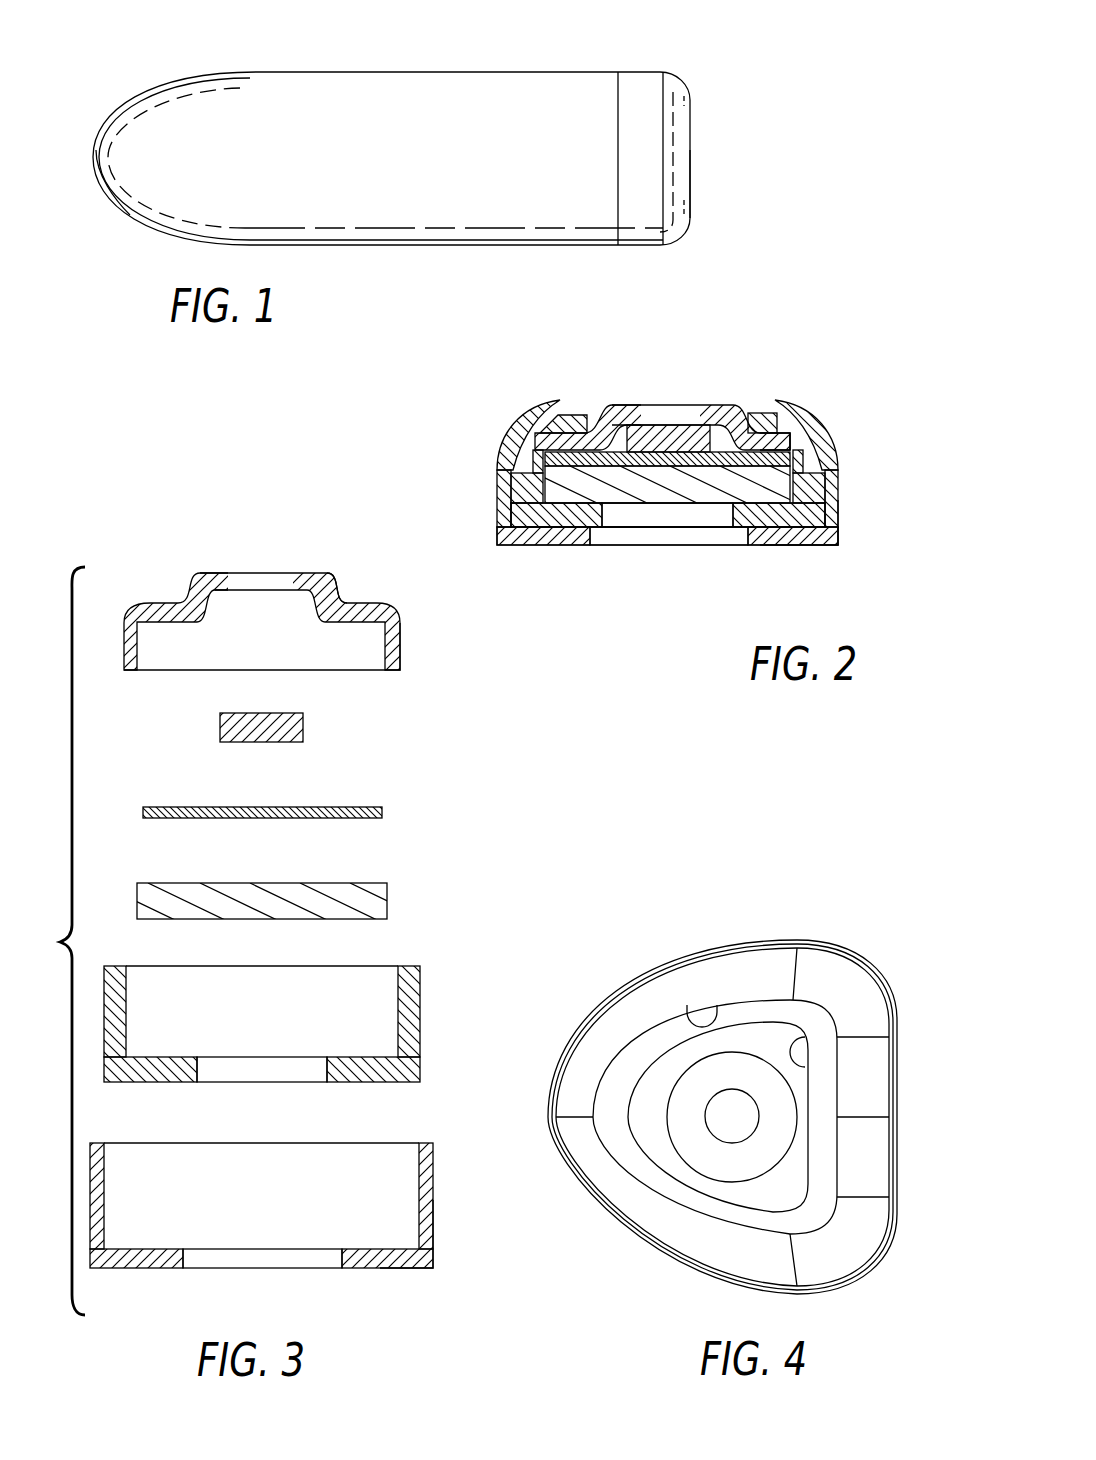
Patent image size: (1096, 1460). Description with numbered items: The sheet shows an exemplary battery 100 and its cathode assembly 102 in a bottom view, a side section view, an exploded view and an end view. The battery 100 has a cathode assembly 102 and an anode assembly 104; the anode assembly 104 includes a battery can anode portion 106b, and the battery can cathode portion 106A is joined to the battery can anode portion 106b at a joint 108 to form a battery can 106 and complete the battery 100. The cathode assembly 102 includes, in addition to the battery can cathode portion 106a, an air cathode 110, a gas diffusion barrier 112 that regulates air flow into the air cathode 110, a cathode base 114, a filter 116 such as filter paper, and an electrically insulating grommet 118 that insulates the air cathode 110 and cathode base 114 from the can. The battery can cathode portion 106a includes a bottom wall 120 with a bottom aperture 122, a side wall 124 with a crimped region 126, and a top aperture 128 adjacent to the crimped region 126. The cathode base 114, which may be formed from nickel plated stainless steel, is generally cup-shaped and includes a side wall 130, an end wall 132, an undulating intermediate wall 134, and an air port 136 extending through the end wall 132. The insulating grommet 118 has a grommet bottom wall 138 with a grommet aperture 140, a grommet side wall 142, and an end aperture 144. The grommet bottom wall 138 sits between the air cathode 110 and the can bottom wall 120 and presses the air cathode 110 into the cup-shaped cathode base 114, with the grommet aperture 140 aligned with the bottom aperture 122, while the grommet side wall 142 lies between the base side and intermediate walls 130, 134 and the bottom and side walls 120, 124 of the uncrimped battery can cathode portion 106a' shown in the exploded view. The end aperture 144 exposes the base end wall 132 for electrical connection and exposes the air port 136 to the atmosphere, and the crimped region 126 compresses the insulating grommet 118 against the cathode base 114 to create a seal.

In FIG. 1, the battery 100 is at (426, 156).
In FIG. 1, the cathode assembly 102 is at (725, 157).
In FIG. 2, the cathode assembly 102 is at (657, 479).
In FIG. 4, the cathode assembly 102 is at (721, 1083).
In FIG. 1, the anode assembly 104 is at (426, 158).
In FIG. 1, the battery can 106 is at (381, 172).
In FIG. 1, the battery can cathode portion 106A is at (690, 188).
In FIG. 2, the battery can cathode portion 106a is at (841, 563).
In FIG. 4, the battery can cathode portion 106a is at (722, 1110).
In FIG. 3, the uncrimped battery can cathode portion 106a' is at (448, 1257).
In FIG. 1, the battery can anode portion 106b is at (103, 193).
In FIG. 1, the joint 108 is at (616, 200).
In FIG. 2, the air cathode 110 is at (556, 486).
In FIG. 3, the air cathode 110 is at (388, 903).
In FIG. 2, the gas diffusion barrier 112 is at (562, 459).
In FIG. 3, the gas diffusion barrier 112 is at (383, 812).
In FIG. 2, the cathode base 114 is at (728, 394).
In FIG. 3, the cathode base 114 is at (294, 581).
In FIG. 4, the cathode base 114 is at (721, 1108).
In FIG. 2, the filter 116 is at (642, 432).
In FIG. 3, the filter 116 is at (305, 727).
In FIG. 2, the insulating grommet 118 is at (720, 539).
In FIG. 3, the insulating grommet 118 is at (295, 1033).
In FIG. 4, the insulating grommet 118 is at (745, 1000).
In FIG. 2, the bottom wall 120 is at (543, 537).
In FIG. 3, the bottom wall 120 is at (140, 1269).
In FIG. 2, the bottom aperture 122 is at (606, 538).
In FIG. 3, the bottom aperture 122 is at (341, 1266).
In FIG. 2, the side wall 124 is at (657, 519).
In FIG. 3, the side wall 124 is at (303, 1241).
In FIG. 4, the side wall 124 is at (712, 1110).
In FIG. 2, the crimped region 126 is at (521, 431).
In FIG. 4, the crimped region 126 is at (592, 1055).
In FIG. 2, the top aperture 128 is at (567, 405).
In FIG. 4, the top aperture 128 is at (690, 1028).
In FIG. 2, the side wall 130 is at (822, 478).
In FIG. 3, the side wall 130 is at (401, 646).
In FIG. 2, the end wall 132 is at (718, 403).
In FIG. 3, the end wall 132 is at (222, 575).
In FIG. 4, the end wall 132 is at (718, 1160).
In FIG. 2, the undulating intermediate wall 134 is at (803, 418).
In FIG. 3, the undulating intermediate wall 134 is at (350, 605).
In FIG. 2, the air port 136 is at (685, 418).
In FIG. 3, the air port 136 is at (232, 585).
In FIG. 4, the air port 136 is at (712, 1105).
In FIG. 2, the grommet bottom wall 138 is at (770, 516).
In FIG. 3, the grommet bottom wall 138 is at (166, 1083).
In FIG. 2, the grommet aperture 140 is at (633, 522).
In FIG. 3, the grommet aperture 140 is at (326, 1068).
In FIG. 2, the grommet side wall 142 is at (810, 492).
In FIG. 3, the grommet side wall 142 is at (421, 984).
In FIG. 2, the grommet end wall aperture 144 is at (596, 408).
In FIG. 4, the grommet end wall aperture 144 is at (790, 1050).